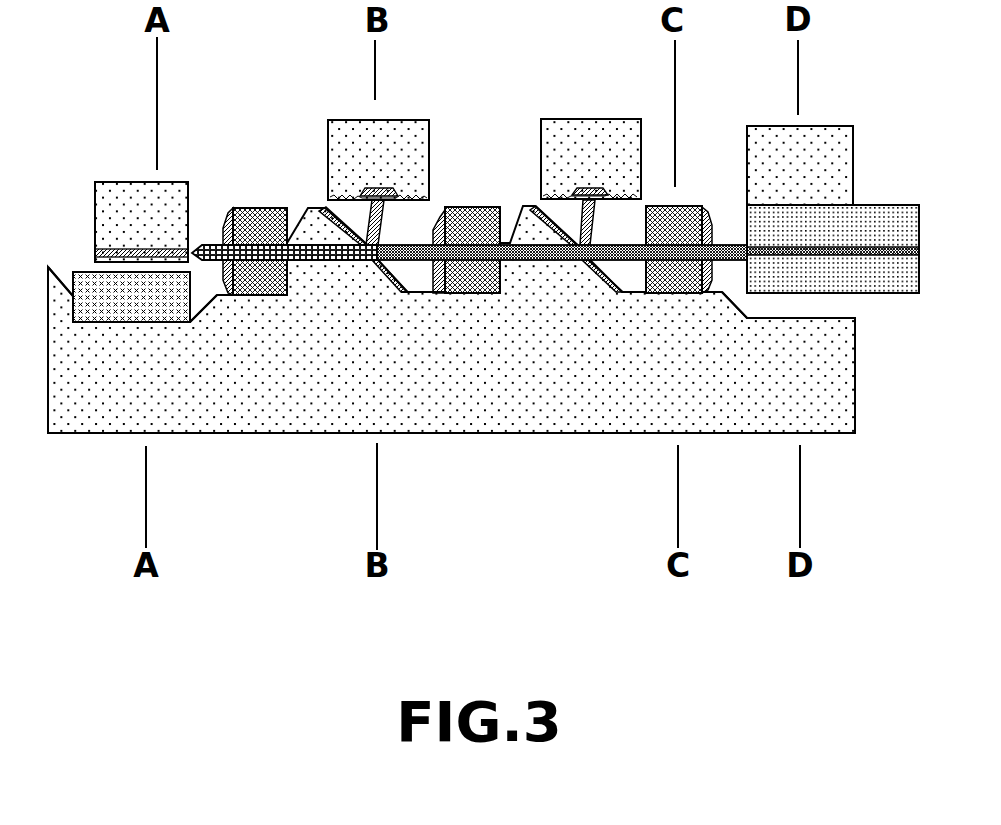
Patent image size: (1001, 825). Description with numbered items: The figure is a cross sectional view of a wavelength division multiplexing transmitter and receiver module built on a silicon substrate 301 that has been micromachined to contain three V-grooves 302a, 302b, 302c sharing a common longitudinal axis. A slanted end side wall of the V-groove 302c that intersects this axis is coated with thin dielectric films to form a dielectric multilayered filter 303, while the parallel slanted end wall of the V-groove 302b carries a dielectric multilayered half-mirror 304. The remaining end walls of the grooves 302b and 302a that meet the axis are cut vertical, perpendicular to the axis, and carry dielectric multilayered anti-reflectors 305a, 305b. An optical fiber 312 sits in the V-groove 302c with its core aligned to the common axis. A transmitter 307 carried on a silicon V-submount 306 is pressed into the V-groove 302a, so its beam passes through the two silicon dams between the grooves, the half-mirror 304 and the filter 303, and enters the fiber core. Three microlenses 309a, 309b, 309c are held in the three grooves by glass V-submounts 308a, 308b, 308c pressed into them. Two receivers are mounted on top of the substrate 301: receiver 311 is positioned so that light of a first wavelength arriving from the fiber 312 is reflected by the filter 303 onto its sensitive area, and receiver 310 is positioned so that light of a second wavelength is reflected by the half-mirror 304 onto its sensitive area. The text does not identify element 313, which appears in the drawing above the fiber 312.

The silicon substrate 301 is at (451, 350).
The V-groove 302a is at (137, 405).
The V-groove 302b is at (416, 401).
The V-groove 302c is at (777, 405).
The dielectric multilayered filter 303 is at (576, 347).
The dielectric multilayered half-mirror 304 is at (347, 347).
The dielectric multilayered anti-reflector 305a is at (284, 394).
The dielectric multilayered anti-reflector 305b is at (562, 185).
The silicon V-submount 306 is at (129, 397).
The transmitter 307 is at (138, 172).
The glass V-submount 308a is at (272, 182).
The glass V-submount 308b is at (501, 375).
The glass V-submount 308c is at (645, 374).
The microlens 309a is at (212, 202).
The microlens 309b is at (463, 352).
The microlens 309c is at (722, 189).
The receiver 310 is at (382, 133).
The receiver 311 is at (591, 133).
The optical fiber 312 is at (833, 183).
The anchor electrode 313 is at (782, 114).